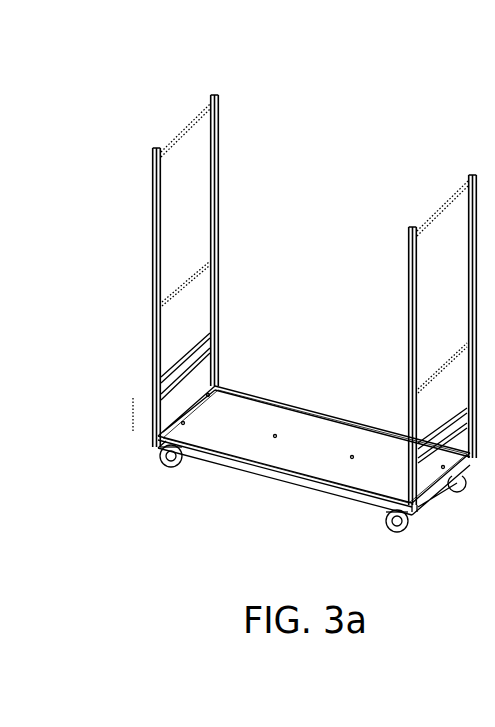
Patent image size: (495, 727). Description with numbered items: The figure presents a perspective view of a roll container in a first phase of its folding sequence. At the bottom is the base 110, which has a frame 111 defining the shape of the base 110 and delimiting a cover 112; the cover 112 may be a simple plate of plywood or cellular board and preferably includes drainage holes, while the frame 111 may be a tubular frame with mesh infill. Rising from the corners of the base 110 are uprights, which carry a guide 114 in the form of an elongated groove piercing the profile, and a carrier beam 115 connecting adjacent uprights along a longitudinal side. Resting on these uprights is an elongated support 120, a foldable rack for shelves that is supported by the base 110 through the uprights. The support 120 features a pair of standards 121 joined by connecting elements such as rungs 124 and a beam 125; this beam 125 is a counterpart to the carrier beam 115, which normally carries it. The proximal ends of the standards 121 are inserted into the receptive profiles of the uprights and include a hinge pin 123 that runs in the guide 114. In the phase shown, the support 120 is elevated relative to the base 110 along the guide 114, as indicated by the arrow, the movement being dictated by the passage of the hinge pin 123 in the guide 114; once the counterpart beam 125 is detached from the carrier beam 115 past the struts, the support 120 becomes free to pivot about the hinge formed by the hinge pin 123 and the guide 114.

The base 110 is at (212, 473).
The frame 111 is at (285, 476).
The cover 112 is at (378, 476).
The guide 114 is at (152, 436).
The carrier beam 115 is at (215, 348).
The support 120 is at (233, 129).
The standard 121 is at (153, 245).
The hinge pin 123 is at (152, 405).
The rung 124 is at (185, 128).
The beam 125 is at (215, 340).